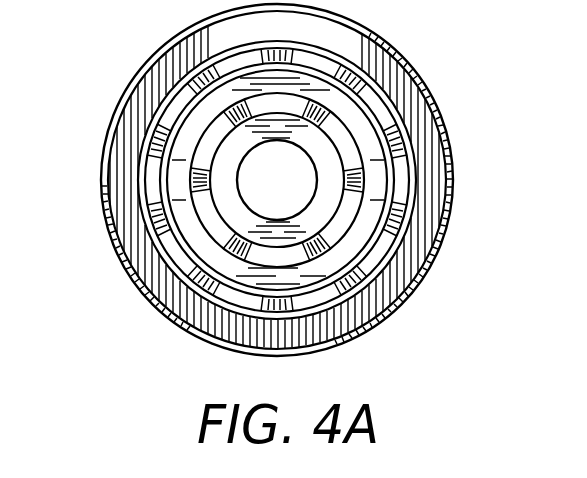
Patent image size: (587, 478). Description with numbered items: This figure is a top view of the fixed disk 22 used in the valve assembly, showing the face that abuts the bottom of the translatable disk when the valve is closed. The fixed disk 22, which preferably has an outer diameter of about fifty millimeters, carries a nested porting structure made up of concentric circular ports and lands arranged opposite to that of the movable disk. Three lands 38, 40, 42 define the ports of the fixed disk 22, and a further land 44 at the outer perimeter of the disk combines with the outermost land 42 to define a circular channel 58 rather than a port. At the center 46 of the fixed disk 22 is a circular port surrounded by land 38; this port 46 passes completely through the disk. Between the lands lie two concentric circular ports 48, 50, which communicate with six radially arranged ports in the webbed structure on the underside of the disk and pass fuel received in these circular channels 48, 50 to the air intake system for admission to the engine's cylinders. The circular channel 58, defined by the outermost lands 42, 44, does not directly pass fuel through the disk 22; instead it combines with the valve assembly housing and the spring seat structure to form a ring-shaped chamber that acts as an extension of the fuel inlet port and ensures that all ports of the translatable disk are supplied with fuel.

The fixed disk 22 is at (404, 302).
The land 38 is at (320, 133).
The land 40 is at (365, 135).
The land 42 is at (405, 213).
The further land 44 is at (453, 183).
The center / circular port 46 is at (290, 191).
The concentric circular port 48 is at (222, 110).
The concentric circular port 50 is at (185, 72).
The circular channel 58 is at (328, 322).